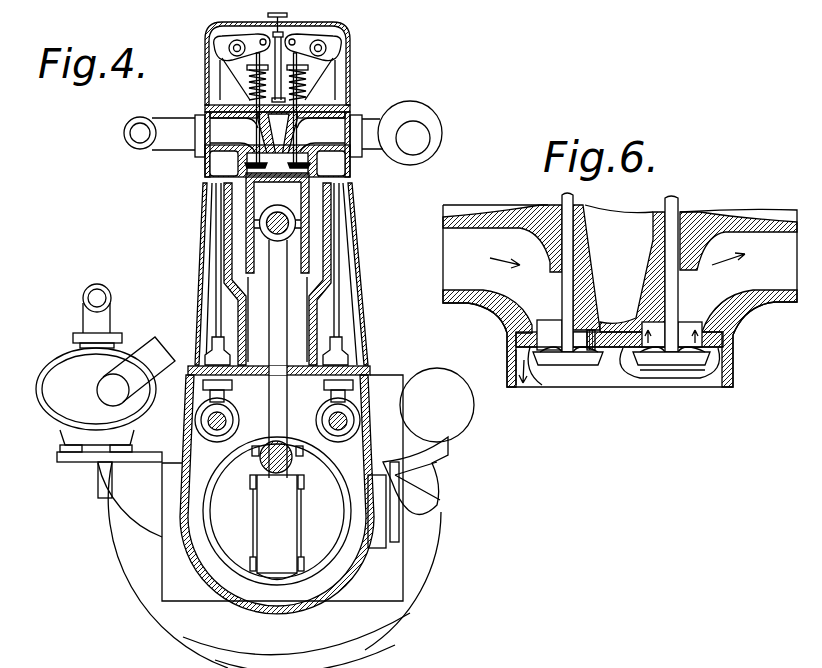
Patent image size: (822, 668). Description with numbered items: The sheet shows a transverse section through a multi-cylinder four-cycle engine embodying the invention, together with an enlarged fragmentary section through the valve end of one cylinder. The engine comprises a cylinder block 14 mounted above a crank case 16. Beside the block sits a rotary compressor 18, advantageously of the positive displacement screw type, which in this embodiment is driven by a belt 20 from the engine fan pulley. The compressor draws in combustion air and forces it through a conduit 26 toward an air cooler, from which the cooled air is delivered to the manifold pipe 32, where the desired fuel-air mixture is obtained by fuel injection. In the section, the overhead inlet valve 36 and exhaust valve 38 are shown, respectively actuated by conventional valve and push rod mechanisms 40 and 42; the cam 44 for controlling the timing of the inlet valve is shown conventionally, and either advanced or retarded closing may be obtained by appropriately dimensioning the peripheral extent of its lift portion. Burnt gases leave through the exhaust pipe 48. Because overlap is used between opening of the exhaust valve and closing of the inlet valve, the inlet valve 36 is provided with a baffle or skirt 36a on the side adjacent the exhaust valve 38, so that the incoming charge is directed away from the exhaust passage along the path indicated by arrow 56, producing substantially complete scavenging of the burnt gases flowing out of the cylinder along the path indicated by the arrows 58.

In FIG. 4, the cylinder block 14 is at (318, 322).
In FIG. 4, the crank case 16 is at (167, 618).
In FIG. 4, the rotary compressor 18 is at (58, 356).
In FIG. 4, the belt 20 is at (160, 358).
In FIG. 4, the conduit 26 is at (110, 297).
In FIG. 4, the manifold pipe 32 is at (124, 132).
In FIG. 4, the inlet valve 36 is at (238, 157).
In FIG. 6, the inlet valve 36 is at (576, 365).
In FIG. 6, the baffle or skirt 36a is at (592, 320).
In FIG. 4, the exhaust valve 38 is at (320, 157).
In FIG. 6, the exhaust valve 38 is at (674, 347).
In FIG. 4, the valve and push rod mechanism 40 is at (215, 230).
In FIG. 4, the valve and push rod mechanism 42 is at (343, 240).
In FIG. 4, the cam 44 is at (226, 414).
In FIG. 4, the exhaust pipe 48 is at (422, 121).
In FIG. 6, the arrow 56 is at (544, 372).
In FIG. 6, the arrows 58 is at (713, 370).